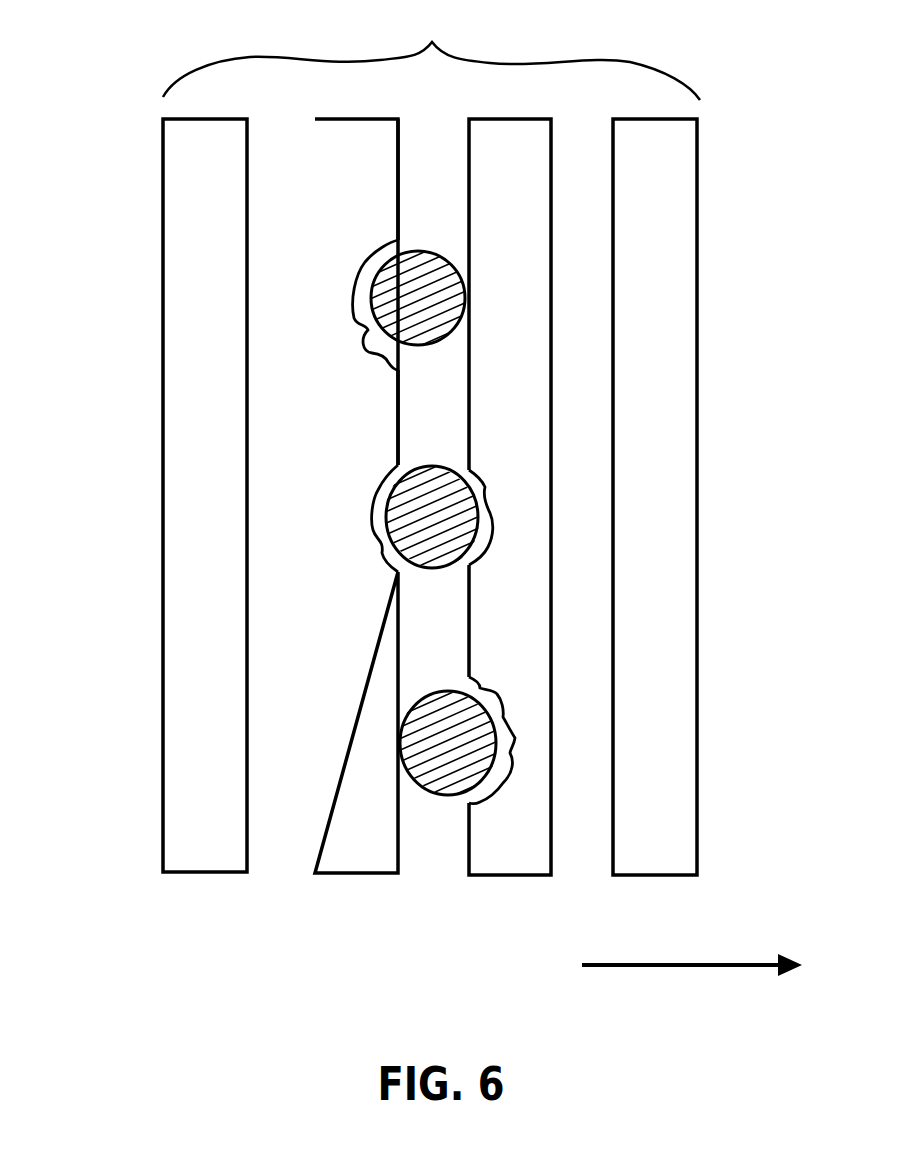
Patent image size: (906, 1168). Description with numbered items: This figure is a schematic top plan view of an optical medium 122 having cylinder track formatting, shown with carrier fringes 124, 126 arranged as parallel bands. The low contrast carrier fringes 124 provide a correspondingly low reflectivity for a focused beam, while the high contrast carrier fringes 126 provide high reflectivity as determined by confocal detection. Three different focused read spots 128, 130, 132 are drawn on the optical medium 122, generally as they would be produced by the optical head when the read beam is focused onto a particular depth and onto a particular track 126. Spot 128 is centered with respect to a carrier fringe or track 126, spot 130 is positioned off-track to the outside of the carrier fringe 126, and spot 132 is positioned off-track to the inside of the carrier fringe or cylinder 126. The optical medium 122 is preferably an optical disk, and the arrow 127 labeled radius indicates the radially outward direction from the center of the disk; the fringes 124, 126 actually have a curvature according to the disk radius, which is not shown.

The optical medium 122 is at (431, 55).
The carrier fringe 124 is at (163, 831).
The carrier fringe 126 is at (288, 842).
The arrow 127 is at (687, 965).
The focused read spot 128 is at (420, 465).
The focused read spot 130 is at (428, 693).
The focused read spot 132 is at (419, 248).